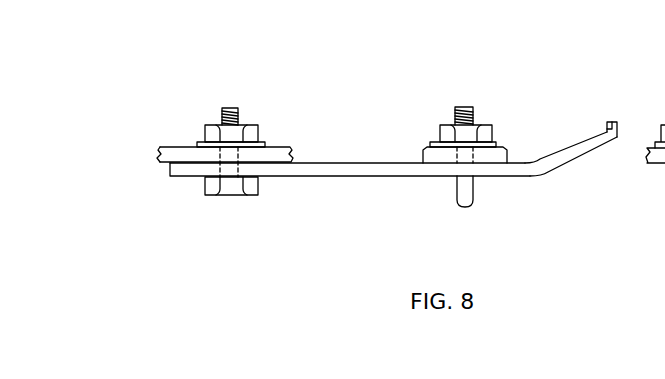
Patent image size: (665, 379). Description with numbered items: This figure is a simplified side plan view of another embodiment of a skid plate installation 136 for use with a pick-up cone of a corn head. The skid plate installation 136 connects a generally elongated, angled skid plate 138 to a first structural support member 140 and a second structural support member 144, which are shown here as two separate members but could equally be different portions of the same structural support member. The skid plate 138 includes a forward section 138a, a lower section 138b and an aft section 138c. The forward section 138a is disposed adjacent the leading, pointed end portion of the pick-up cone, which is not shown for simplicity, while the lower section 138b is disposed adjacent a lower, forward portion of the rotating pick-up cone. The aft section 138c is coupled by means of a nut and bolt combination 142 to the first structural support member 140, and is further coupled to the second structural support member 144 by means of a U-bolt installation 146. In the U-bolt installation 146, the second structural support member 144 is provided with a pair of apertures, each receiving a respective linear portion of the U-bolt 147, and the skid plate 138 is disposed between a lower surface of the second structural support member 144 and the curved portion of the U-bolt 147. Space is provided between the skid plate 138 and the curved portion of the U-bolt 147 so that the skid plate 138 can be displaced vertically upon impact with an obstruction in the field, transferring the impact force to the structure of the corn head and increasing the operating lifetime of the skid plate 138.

The skid plate installation 136 is at (160, 213).
The skid plate 138 is at (347, 163).
The forward section 138a is at (620, 125).
The lower section 138b is at (588, 150).
The aft section 138c is at (388, 168).
The first structural support member 140 is at (175, 157).
The nut and bolt combination 142 is at (215, 122).
The second structural support member 144 is at (500, 150).
The U-bolt installation 146 is at (451, 123).
The U-bolt 147 is at (468, 190).